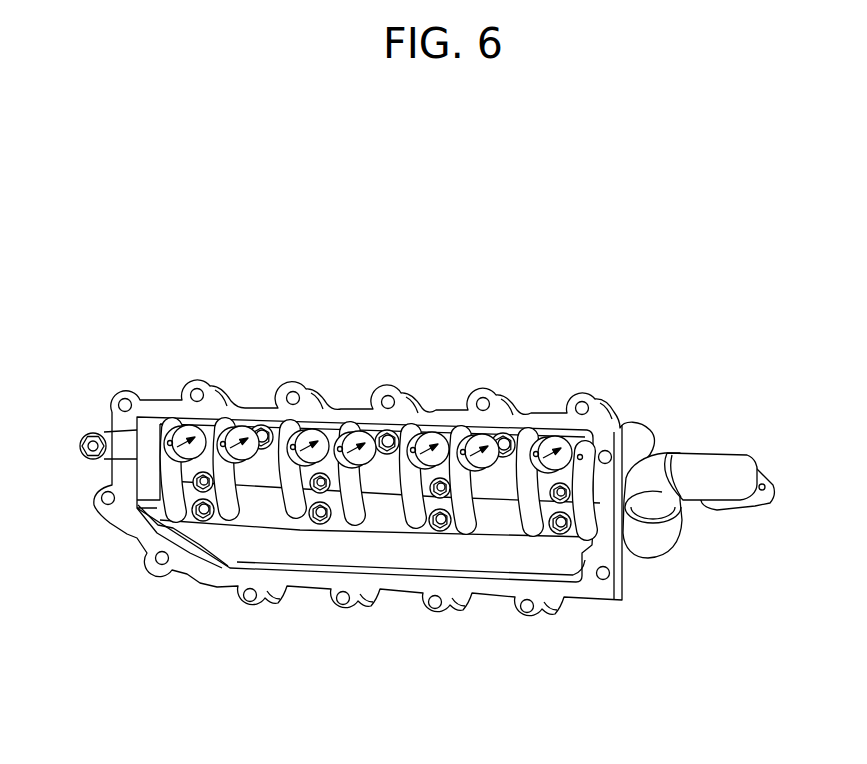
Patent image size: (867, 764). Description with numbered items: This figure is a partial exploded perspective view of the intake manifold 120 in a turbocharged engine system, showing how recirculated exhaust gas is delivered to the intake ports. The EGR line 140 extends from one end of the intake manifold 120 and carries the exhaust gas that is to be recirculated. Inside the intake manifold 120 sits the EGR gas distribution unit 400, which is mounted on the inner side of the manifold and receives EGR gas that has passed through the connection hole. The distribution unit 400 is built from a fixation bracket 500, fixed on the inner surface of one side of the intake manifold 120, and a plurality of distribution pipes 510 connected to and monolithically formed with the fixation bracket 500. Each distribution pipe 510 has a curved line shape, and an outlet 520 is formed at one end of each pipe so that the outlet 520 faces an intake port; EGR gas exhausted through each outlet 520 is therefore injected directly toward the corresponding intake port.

The intake manifold 120 is at (603, 423).
The EGR line 140 is at (704, 467).
The EGR gas distribution unit 400 is at (365, 525).
The fixation bracket 500 is at (252, 507).
The distribution pipe 510 is at (222, 481).
The outlet 520 is at (241, 430).